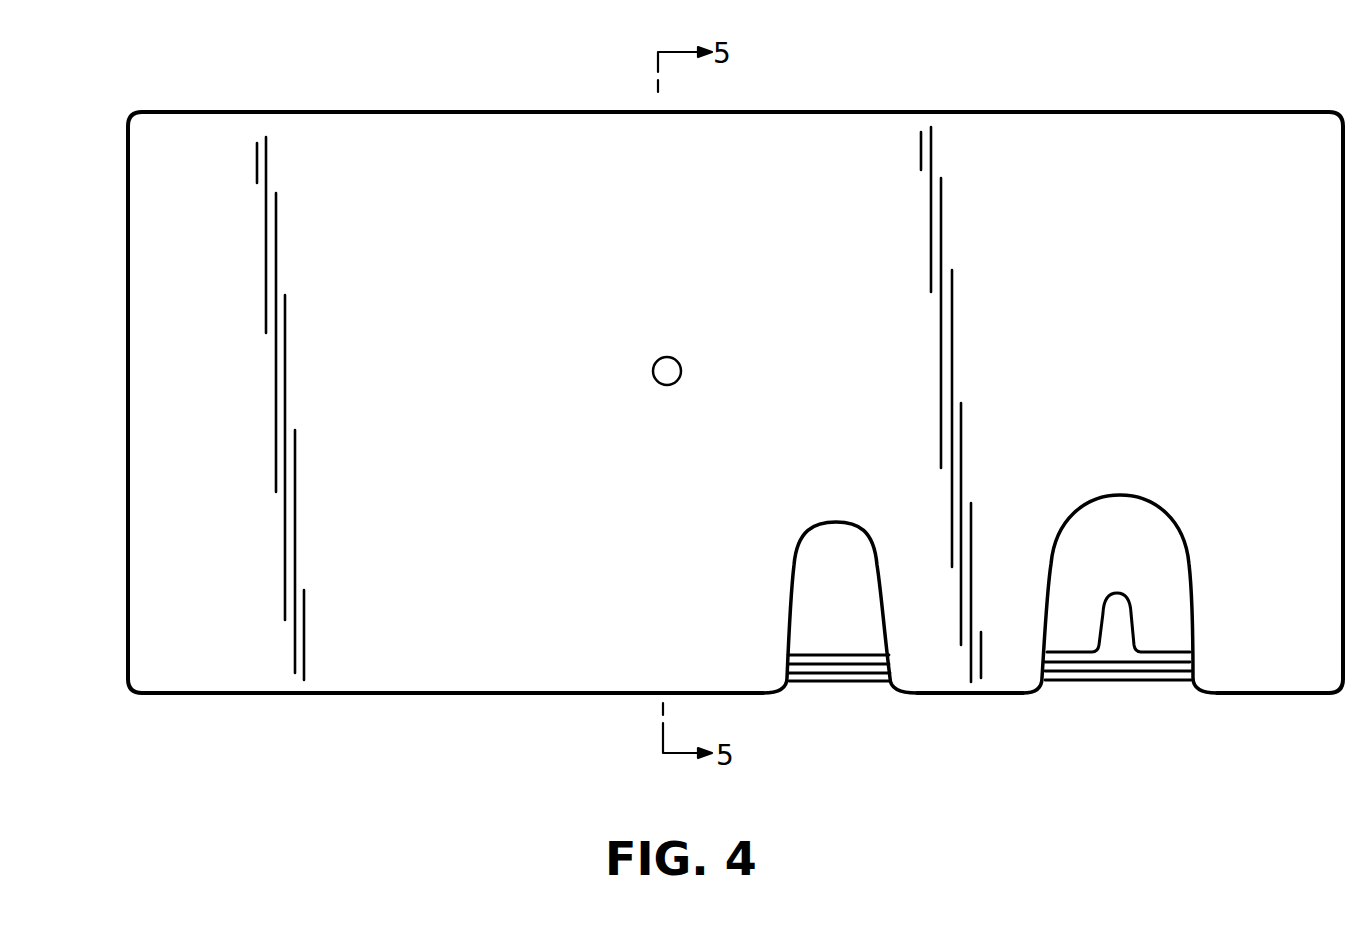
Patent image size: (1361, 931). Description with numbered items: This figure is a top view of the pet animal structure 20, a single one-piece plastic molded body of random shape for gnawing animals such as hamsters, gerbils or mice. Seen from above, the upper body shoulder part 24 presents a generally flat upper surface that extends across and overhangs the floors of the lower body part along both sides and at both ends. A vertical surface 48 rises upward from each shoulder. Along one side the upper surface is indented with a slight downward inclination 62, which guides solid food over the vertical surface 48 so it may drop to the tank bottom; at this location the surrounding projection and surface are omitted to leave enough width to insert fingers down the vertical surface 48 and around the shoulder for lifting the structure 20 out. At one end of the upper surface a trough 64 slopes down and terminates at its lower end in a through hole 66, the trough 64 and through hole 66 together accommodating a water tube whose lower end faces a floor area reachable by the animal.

The plastic molded structure 20 is at (1116, 106).
The upper body shoulder part 24 is at (472, 126).
The vertical surface 48 is at (863, 657).
The downward inclination 62 is at (823, 617).
The trough 64 is at (1078, 610).
The through hole 66 is at (1119, 630).